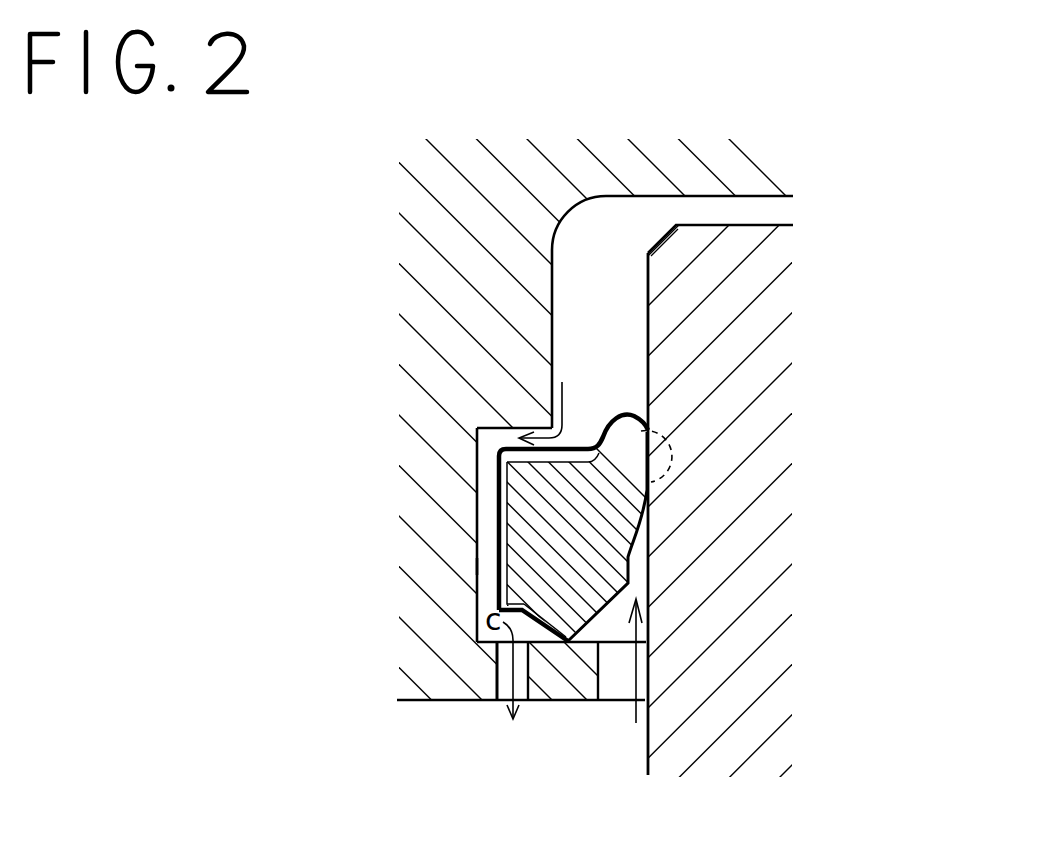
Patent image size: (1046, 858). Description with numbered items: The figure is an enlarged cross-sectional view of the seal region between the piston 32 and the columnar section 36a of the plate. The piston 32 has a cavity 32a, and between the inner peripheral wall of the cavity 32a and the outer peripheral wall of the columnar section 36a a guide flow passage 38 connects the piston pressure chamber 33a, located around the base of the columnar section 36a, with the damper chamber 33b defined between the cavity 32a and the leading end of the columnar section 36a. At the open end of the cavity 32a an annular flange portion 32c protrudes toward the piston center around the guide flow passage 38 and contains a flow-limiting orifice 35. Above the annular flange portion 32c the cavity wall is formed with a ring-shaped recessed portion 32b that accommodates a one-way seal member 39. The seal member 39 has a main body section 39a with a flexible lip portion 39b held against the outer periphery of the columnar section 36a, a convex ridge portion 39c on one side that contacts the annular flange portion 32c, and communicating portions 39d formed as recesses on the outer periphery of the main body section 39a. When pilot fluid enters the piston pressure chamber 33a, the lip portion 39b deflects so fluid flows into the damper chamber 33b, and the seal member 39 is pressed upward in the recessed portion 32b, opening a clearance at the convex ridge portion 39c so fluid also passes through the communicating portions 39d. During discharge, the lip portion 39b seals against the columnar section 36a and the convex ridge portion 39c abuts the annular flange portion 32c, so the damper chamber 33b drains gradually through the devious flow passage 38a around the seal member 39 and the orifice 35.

The piston 32 is at (523, 468).
The cavity 32a is at (643, 197).
The ring-shaped recessed portion 32b is at (477, 493).
The annular flange portion 32c is at (566, 688).
The piston pressure chamber 33a is at (625, 797).
The damper chamber 33b is at (628, 310).
The flow-limiting orifice 35 is at (501, 688).
The columnar section 36a is at (575, 500).
The guide flow passage 38 is at (475, 638).
The devious flow passage 38a is at (490, 565).
The one-way seal member 39 is at (576, 590).
The main body section 39a is at (577, 547).
The flexible lip portion 39b is at (640, 430).
The convex ridge portion 39c is at (553, 647).
The communicating portions 39d is at (498, 474).